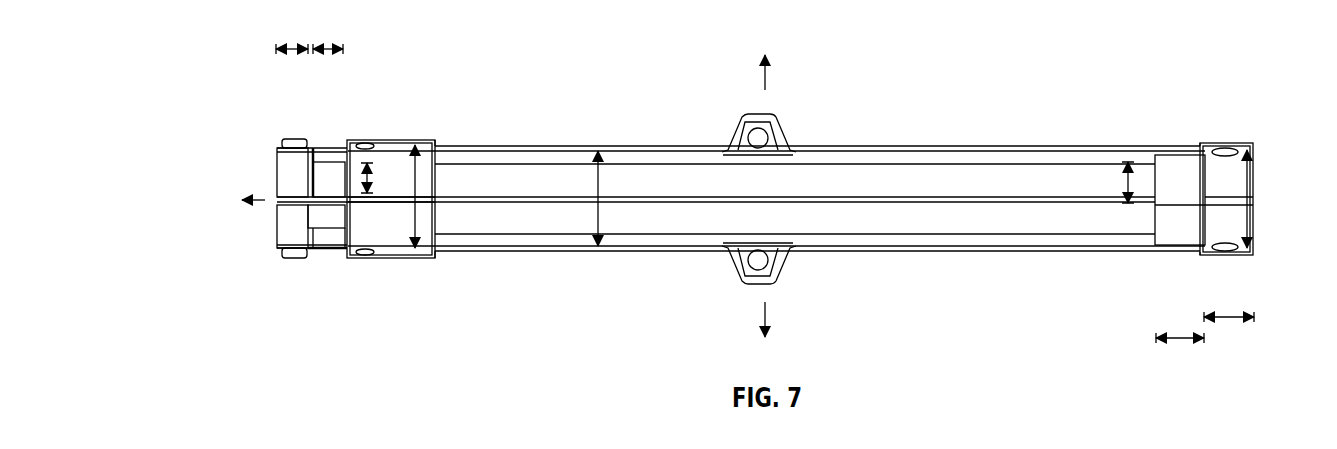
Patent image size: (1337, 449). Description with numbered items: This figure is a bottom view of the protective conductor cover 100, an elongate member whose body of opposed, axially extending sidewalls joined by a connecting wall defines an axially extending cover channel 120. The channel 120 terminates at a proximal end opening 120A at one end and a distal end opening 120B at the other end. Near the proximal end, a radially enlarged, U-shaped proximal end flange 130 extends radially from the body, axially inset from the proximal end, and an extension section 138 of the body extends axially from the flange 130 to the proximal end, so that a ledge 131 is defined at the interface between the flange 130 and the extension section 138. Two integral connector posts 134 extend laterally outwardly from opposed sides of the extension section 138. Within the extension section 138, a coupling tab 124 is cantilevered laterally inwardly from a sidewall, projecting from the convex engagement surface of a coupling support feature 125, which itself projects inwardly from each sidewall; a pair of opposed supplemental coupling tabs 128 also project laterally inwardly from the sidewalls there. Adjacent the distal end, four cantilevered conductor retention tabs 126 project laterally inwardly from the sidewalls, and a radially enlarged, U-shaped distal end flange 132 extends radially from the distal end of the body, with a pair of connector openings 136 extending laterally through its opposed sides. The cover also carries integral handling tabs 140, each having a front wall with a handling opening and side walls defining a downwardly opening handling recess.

The conductor cover 100 is at (1160, 43).
The cover channel 120 is at (787, 193).
The proximal end opening 120A is at (213, 186).
The distal end opening 120B is at (1260, 154).
The coupling tab 124 is at (329, 170).
The coupling support feature 125 is at (312, 150).
The retention tab 126 is at (1173, 168).
The supplemental coupling tab 128 is at (282, 157).
The proximal end flange 130 is at (405, 140).
The ledge 131 is at (348, 222).
The distal end flange 132 is at (1240, 258).
The connector post 134 is at (292, 138).
The connector opening 136 is at (1225, 150).
The extension section 138 is at (340, 253).
The handling tab 140 is at (797, 118).